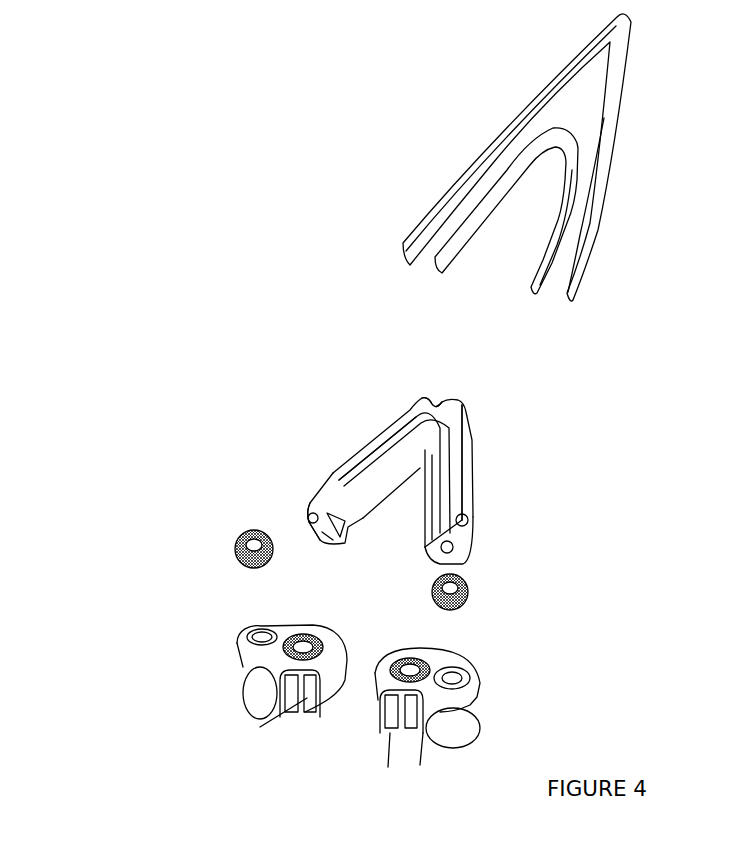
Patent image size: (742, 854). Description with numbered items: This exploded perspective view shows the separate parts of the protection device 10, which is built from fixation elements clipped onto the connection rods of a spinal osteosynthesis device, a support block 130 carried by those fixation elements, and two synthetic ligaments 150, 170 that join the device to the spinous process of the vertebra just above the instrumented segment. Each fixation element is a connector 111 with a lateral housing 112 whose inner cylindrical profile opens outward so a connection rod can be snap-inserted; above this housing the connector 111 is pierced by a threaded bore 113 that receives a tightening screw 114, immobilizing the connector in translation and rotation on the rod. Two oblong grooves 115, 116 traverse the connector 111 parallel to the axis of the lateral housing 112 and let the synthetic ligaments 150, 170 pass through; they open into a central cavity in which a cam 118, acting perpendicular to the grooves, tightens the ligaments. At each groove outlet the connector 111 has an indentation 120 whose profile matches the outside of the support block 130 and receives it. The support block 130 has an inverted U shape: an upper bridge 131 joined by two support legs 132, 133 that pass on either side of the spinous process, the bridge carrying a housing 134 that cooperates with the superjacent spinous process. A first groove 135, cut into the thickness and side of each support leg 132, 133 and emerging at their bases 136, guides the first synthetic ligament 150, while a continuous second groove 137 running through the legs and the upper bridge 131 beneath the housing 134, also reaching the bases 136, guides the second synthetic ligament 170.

The protection device 10 is at (230, 193).
The connector 111 is at (355, 697).
The lateral housing 112 is at (257, 683).
The threaded bore 113 is at (247, 637).
The tightening screw 114 is at (233, 553).
The groove 115 is at (213, 657).
The groove 116 is at (327, 720).
The cam 118 is at (303, 637).
The indentation 120 is at (303, 693).
The support block 130 is at (397, 449).
The upper bridge 131 is at (423, 403).
The support leg 132 is at (370, 437).
The support leg 133 is at (457, 472).
The housing 134 is at (443, 413).
The first groove 135 is at (307, 518).
The base 136 is at (420, 557).
The second groove 137 is at (325, 500).
The first synthetic ligament 150 is at (621, 61).
The second synthetic ligament 170 is at (473, 234).